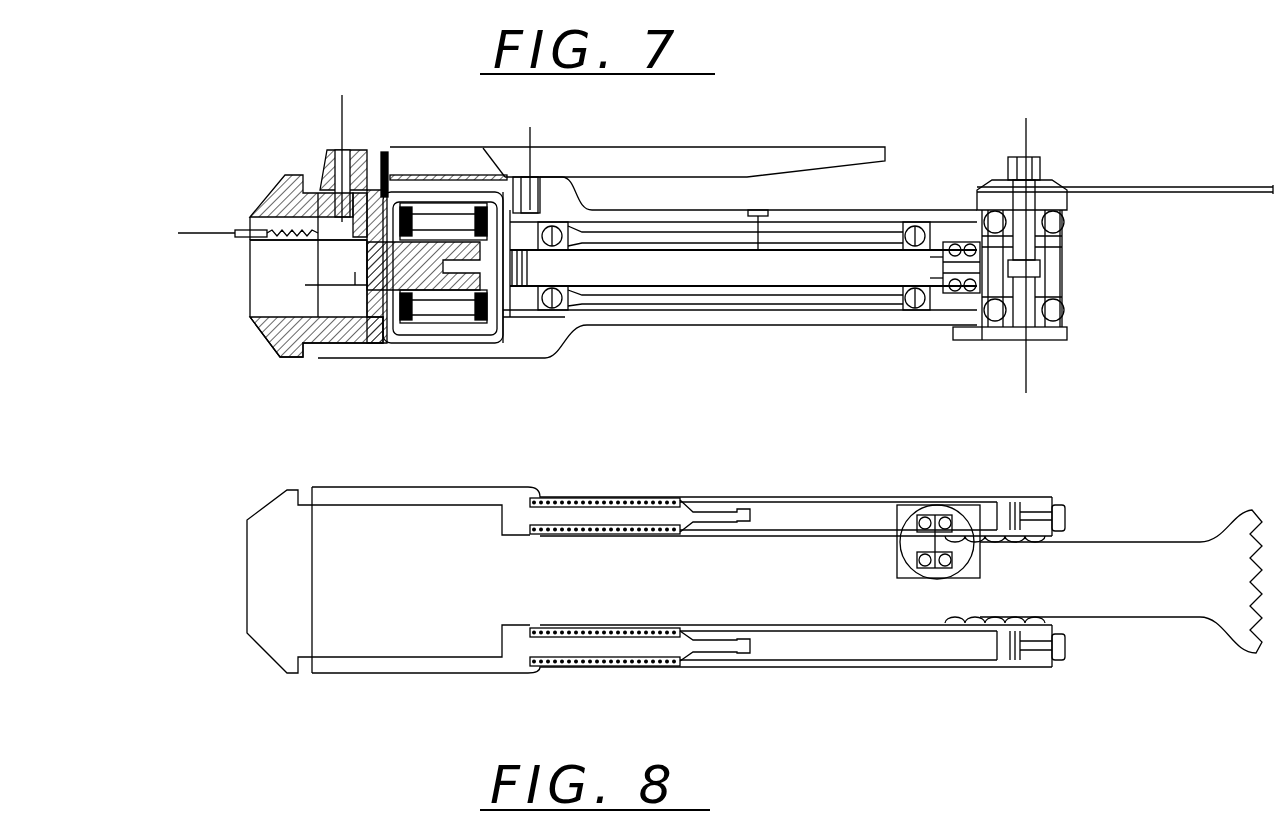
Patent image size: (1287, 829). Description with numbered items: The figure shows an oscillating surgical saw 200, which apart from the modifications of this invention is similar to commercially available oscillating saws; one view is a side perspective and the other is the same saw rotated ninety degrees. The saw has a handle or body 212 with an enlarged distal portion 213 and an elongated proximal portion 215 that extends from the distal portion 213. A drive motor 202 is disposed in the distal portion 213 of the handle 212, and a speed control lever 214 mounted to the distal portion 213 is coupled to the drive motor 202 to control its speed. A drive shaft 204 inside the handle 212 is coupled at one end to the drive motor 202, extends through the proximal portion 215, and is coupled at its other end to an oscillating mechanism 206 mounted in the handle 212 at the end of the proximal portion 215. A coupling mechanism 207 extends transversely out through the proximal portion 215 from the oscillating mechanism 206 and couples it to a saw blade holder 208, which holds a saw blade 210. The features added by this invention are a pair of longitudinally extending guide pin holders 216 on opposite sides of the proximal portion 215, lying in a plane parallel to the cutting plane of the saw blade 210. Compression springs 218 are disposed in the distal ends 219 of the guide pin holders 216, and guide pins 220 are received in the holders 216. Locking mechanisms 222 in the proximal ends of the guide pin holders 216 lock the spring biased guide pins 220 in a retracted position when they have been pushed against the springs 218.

In FIG. 7, the oscillating surgical saw 200 is at (263, 341).
In FIG. 8, the oscillating surgical saw 200 is at (270, 505).
In FIG. 7, the drive motor 202 is at (430, 307).
In FIG. 7, the drive shaft 204 is at (630, 286).
In FIG. 7, the oscillating mechanism 206 is at (1003, 280).
In FIG. 7, the coupling mechanism 207 is at (1025, 223).
In FIG. 7, the saw blade holder 208 is at (1027, 157).
In FIG. 8, the saw blade holder 208 is at (957, 583).
In FIG. 7, the saw blade 210 is at (1113, 188).
In FIG. 8, the saw blade 210 is at (1182, 543).
In FIG. 7, the handle or body 212 is at (262, 192).
In FIG. 7, the enlarged distal portion 213 is at (250, 318).
In FIG. 7, the speed control lever 214 is at (605, 147).
In FIG. 7, the elongated proximal portion 215 is at (773, 325).
In FIG. 8, the guide pin holders 216 is at (802, 497).
In FIG. 8, the compression springs 218 is at (648, 497).
In FIG. 8, the distal ends 219 is at (557, 497).
In FIG. 8, the guide pins 220 is at (872, 502).
In FIG. 8, the locking mechanisms 222 is at (1028, 505).